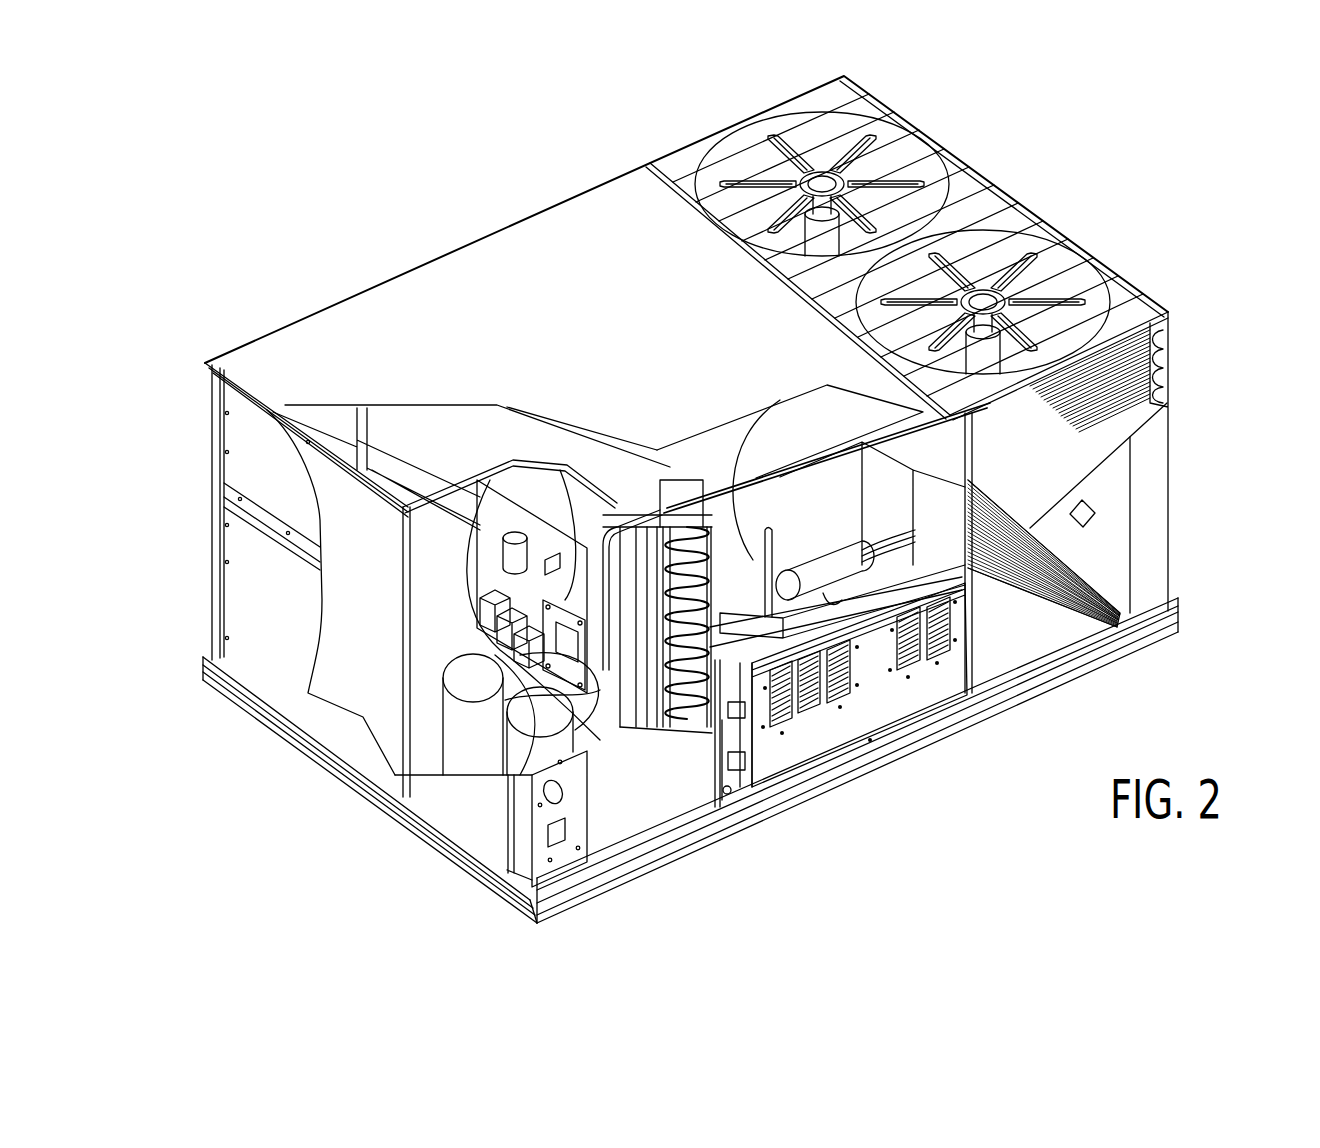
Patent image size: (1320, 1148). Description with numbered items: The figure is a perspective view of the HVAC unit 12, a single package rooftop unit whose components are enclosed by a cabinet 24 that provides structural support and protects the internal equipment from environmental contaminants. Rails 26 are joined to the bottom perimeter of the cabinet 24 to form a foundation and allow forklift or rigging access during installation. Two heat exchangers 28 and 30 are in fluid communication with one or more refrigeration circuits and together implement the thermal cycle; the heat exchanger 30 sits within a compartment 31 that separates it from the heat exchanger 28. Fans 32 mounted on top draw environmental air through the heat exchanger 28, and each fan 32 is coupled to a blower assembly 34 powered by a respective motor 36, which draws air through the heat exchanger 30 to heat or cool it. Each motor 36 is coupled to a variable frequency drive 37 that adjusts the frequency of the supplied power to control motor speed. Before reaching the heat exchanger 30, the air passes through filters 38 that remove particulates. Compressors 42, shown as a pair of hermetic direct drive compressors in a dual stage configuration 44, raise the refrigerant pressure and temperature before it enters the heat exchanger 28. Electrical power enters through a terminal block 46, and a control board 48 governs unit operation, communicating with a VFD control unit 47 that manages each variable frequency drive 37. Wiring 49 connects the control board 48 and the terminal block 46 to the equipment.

The HVAC unit 12 is at (398, 178).
The cabinet 24 is at (250, 628).
The rails 26 is at (282, 725).
The heat exchanger 28 is at (1158, 372).
The heat exchanger 30 is at (687, 707).
The compartment 31 is at (703, 557).
The fans 32 is at (1002, 251).
The blower assembly 34 is at (893, 510).
The motor 36 is at (825, 562).
The variable frequency drive 37 is at (523, 650).
The filters 38 is at (650, 543).
The compressors 42 is at (447, 712).
The dual stage configuration 44 is at (440, 663).
The terminal block 46 is at (508, 603).
The VFD control unit 47 is at (473, 600).
The control board 48 is at (567, 617).
The wiring 49 is at (667, 530).